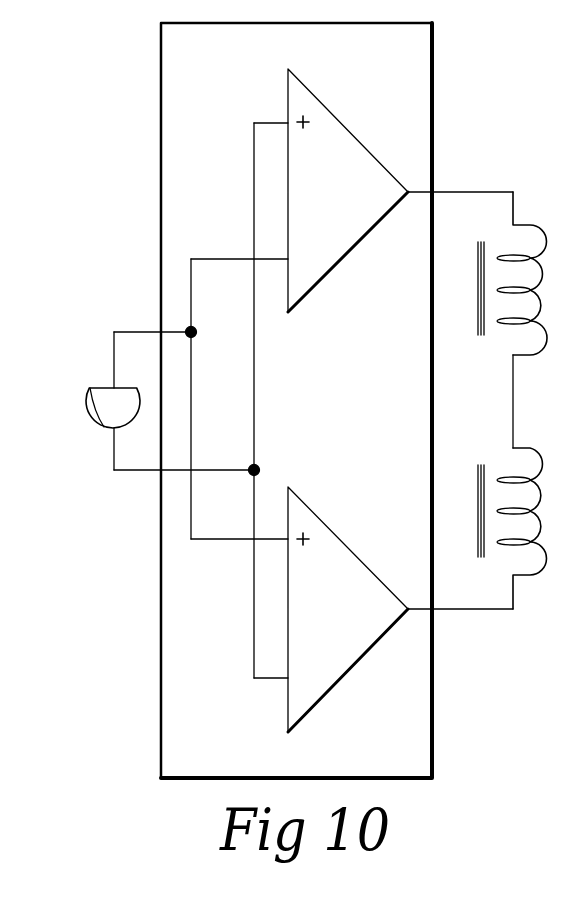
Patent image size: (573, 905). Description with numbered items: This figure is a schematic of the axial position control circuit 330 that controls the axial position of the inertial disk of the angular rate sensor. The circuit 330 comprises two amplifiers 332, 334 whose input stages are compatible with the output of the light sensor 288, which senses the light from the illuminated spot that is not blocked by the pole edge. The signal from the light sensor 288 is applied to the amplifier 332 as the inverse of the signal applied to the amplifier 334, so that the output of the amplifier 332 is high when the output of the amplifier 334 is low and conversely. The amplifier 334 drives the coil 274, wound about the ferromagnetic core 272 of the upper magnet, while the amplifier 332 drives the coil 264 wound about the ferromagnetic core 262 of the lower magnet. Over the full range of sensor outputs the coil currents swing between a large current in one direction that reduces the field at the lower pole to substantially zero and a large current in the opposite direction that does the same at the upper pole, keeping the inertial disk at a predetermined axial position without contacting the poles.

The axial position control circuit 330 is at (413, 755).
The amplifier 334 is at (368, 208).
The amplifier 332 is at (368, 625).
The coil 274 is at (535, 225).
The ferromagnetic core 272 is at (482, 240).
The coil 264 is at (535, 577).
The ferromagnetic core 262 is at (482, 560).
The light sensor 288 is at (102, 428).